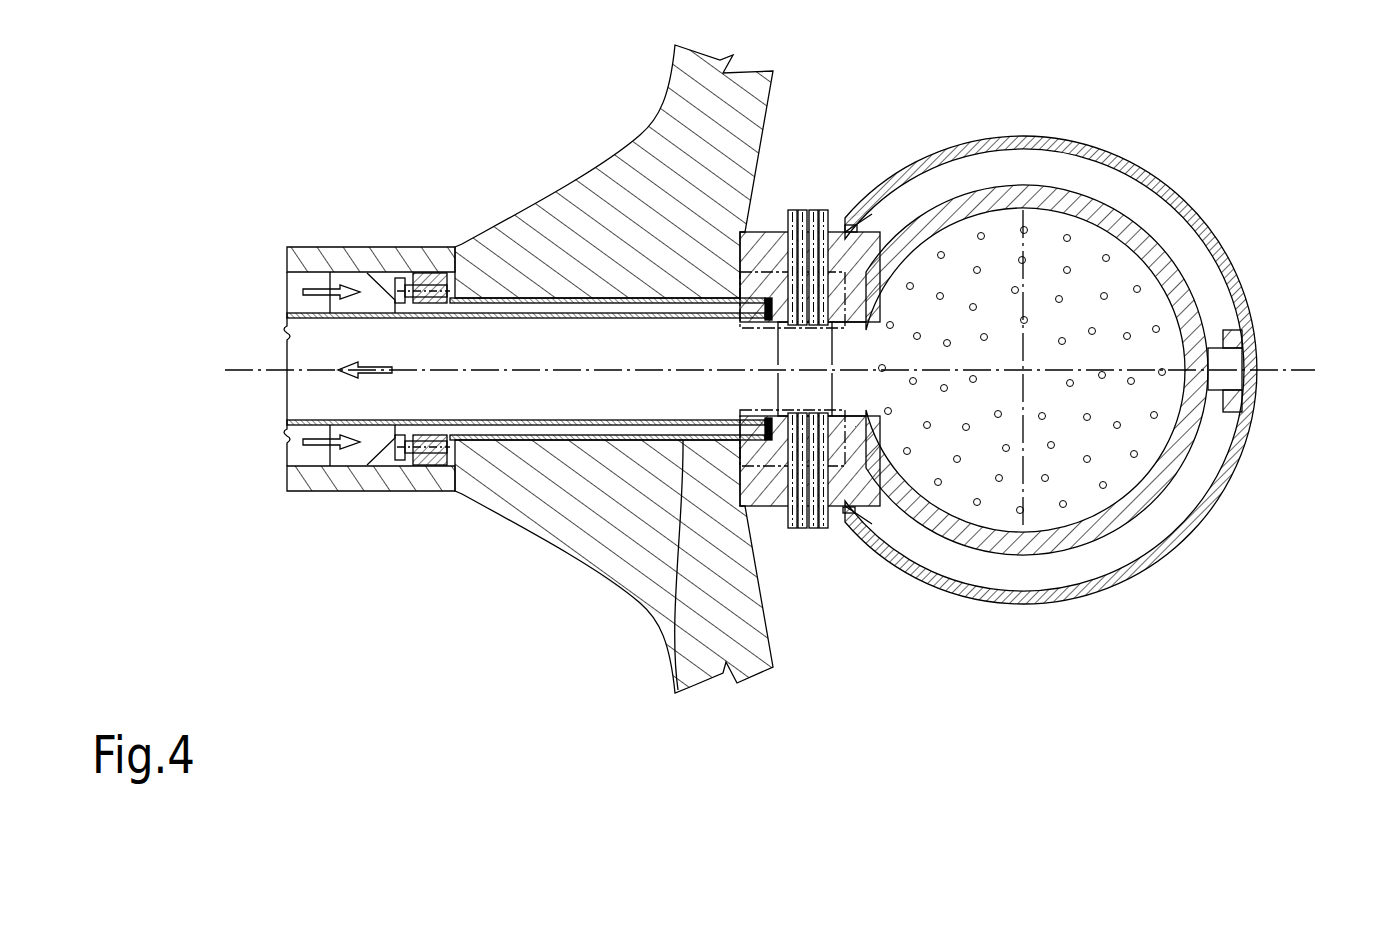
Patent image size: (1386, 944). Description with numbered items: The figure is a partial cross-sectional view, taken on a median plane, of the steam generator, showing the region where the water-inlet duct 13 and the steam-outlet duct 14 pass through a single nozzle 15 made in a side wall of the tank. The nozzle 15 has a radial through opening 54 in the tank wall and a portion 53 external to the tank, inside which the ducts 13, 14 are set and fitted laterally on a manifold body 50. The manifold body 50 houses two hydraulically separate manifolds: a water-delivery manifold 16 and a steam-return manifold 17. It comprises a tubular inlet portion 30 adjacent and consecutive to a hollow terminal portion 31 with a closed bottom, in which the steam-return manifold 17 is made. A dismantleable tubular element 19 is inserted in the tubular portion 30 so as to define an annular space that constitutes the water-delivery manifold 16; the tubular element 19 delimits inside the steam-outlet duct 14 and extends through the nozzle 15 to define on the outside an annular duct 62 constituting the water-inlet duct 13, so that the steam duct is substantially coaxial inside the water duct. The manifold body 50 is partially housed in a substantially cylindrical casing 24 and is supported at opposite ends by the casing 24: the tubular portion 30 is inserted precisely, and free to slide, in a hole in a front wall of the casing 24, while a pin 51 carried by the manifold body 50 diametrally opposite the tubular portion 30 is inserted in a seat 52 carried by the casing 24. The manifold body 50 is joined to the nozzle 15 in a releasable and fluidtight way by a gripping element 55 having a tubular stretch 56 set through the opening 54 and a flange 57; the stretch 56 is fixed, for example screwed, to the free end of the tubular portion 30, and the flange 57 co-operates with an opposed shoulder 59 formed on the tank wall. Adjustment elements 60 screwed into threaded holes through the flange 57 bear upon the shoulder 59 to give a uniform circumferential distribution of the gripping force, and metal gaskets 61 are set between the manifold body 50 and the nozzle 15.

The water-inlet duct 13 is at (357, 282).
The steam-outlet duct 14 is at (425, 347).
The nozzle 15 is at (635, 555).
The water-delivery manifold 16 is at (778, 185).
The steam-return manifold 17 is at (1072, 355).
The dismantleable tubular element 19 is at (555, 440).
The casing 24 is at (1085, 592).
The tubular inlet portion 30 is at (770, 510).
The hollow terminal portion 31 is at (1160, 482).
The manifold body 50 is at (858, 233).
The pin 51 is at (1223, 340).
The seat 52 is at (1233, 393).
The external portion of the nozzle 53 is at (357, 485).
The radial through opening 54 is at (557, 297).
The gripping element 55 is at (509, 297).
The tubular stretch 56 is at (640, 556).
The flange 57 is at (412, 460).
The shoulder 59 is at (455, 458).
The adjustment elements 60 is at (425, 462).
The metal gaskets 61 is at (782, 437).
The annular duct 62 is at (663, 615).